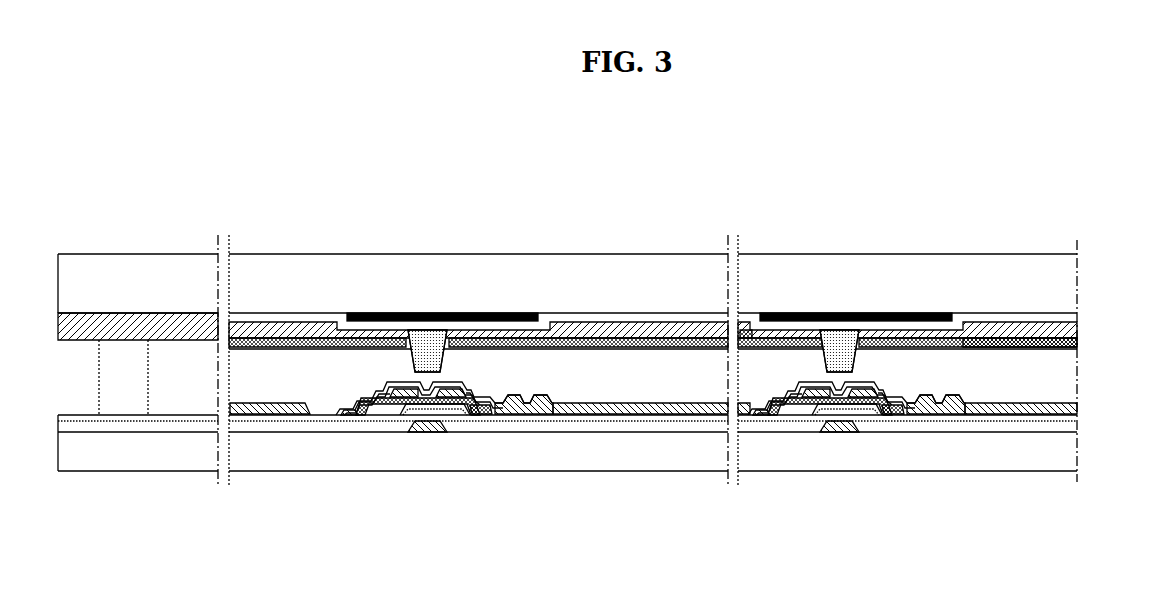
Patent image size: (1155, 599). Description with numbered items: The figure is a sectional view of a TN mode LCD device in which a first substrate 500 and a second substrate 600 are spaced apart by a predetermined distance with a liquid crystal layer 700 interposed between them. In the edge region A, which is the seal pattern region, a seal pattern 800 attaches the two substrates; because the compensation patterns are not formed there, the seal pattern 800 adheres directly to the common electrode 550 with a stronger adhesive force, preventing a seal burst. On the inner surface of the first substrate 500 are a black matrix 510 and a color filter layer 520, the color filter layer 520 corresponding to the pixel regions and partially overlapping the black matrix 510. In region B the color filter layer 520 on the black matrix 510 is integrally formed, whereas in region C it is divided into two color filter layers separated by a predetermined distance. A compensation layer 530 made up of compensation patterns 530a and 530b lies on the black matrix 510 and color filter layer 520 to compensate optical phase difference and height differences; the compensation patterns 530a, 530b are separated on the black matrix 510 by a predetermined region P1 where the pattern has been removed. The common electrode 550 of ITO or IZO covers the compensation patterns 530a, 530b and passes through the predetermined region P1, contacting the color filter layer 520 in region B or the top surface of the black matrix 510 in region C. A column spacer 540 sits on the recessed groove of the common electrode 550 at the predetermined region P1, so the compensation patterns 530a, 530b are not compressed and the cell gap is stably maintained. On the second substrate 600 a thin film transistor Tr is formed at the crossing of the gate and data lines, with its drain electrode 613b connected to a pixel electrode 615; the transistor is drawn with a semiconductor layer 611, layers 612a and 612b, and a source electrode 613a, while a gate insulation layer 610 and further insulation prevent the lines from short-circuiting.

The first substrate 500 is at (1068, 283).
The black matrix 510 is at (430, 313).
The color filter layer 520 is at (640, 322).
The compensation layer 530 is at (1077, 340).
The compensation pattern 530a is at (1010, 338).
The compensation pattern 530b is at (752, 330).
The column spacer 540 is at (447, 355).
The common electrode 550 is at (1077, 349).
The second substrate 600 is at (1077, 452).
The gate insulation layer 610 is at (1077, 426).
The semiconductor layer 611 is at (432, 430).
The gate electrode 612a is at (378, 406).
The gate insulating layer 612b is at (396, 416).
The source electrode 613a is at (352, 411).
The drain electrode 613b is at (470, 406).
The pixel electrode 615 is at (253, 414).
The liquid crystal layer 700 is at (1070, 378).
The seal pattern 800 is at (126, 372).
The predetermined region P1 is at (419, 348).
The thin film transistor Tr is at (473, 533).
The edge region A is at (143, 216).
The region B is at (505, 216).
The region C is at (933, 216).